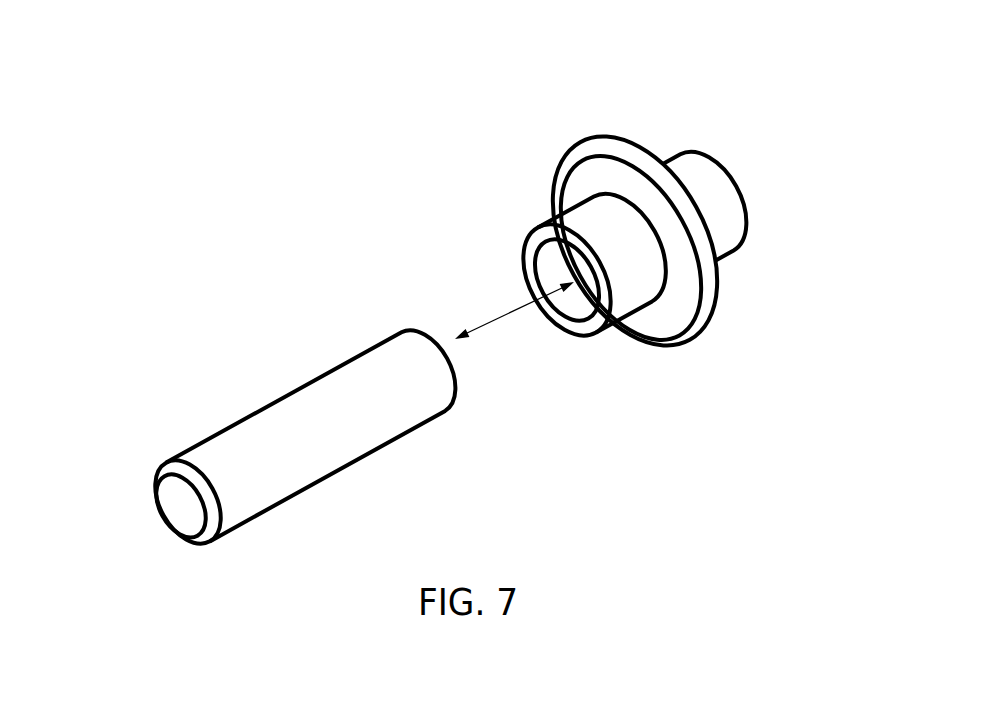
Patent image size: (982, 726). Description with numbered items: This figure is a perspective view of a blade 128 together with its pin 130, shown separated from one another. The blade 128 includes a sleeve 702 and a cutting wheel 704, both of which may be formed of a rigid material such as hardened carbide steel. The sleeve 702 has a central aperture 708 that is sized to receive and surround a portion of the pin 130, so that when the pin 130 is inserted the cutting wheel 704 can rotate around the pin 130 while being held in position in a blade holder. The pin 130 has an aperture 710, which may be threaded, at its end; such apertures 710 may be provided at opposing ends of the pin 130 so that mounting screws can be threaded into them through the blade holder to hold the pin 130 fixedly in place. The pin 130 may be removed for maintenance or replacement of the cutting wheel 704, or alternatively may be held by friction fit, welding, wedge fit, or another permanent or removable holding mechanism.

The blade 128 is at (597, 241).
The pin 130 is at (254, 495).
The sleeve 702 is at (592, 233).
The cutting wheel 704 is at (663, 305).
The central aperture 708 is at (580, 307).
The aperture 710 is at (177, 507).